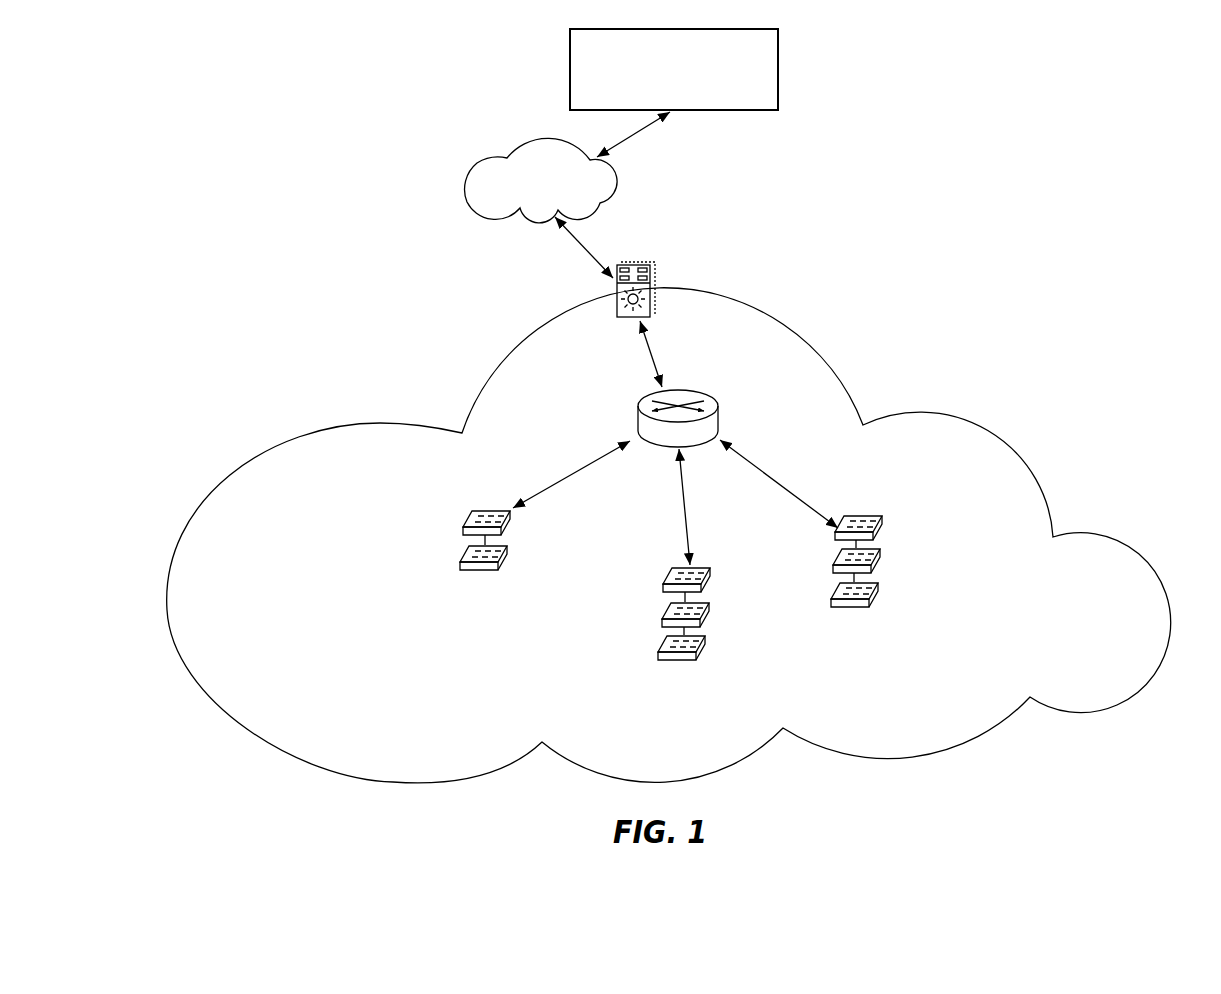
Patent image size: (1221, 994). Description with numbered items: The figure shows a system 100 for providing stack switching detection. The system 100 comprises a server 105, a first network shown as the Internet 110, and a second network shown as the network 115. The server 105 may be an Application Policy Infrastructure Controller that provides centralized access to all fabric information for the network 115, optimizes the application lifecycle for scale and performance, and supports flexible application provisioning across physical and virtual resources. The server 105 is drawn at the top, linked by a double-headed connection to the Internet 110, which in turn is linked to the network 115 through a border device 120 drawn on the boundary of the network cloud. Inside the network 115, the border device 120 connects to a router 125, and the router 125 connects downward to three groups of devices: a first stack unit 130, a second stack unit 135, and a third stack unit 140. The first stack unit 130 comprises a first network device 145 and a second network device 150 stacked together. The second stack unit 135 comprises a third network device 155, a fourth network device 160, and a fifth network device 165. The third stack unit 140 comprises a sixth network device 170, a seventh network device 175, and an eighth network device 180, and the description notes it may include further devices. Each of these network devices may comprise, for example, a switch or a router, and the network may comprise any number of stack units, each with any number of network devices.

The system 100 is at (447, 68).
The server 105 is at (779, 80).
The Internet 110 is at (458, 177).
The network 115 is at (778, 320).
The border device 120 is at (617, 298).
The router 125 is at (638, 418).
The first stack unit 130 is at (465, 490).
The second stack unit 135 is at (658, 535).
The third stack unit 140 is at (857, 463).
The first network device 145 is at (463, 527).
The second network device 150 is at (460, 562).
The third network device 155 is at (663, 587).
The fourth network device 160 is at (662, 620).
The fifth network device 165 is at (658, 655).
The sixth network device 170 is at (880, 532).
The seventh network device 175 is at (878, 565).
The eighth network device 180 is at (876, 598).